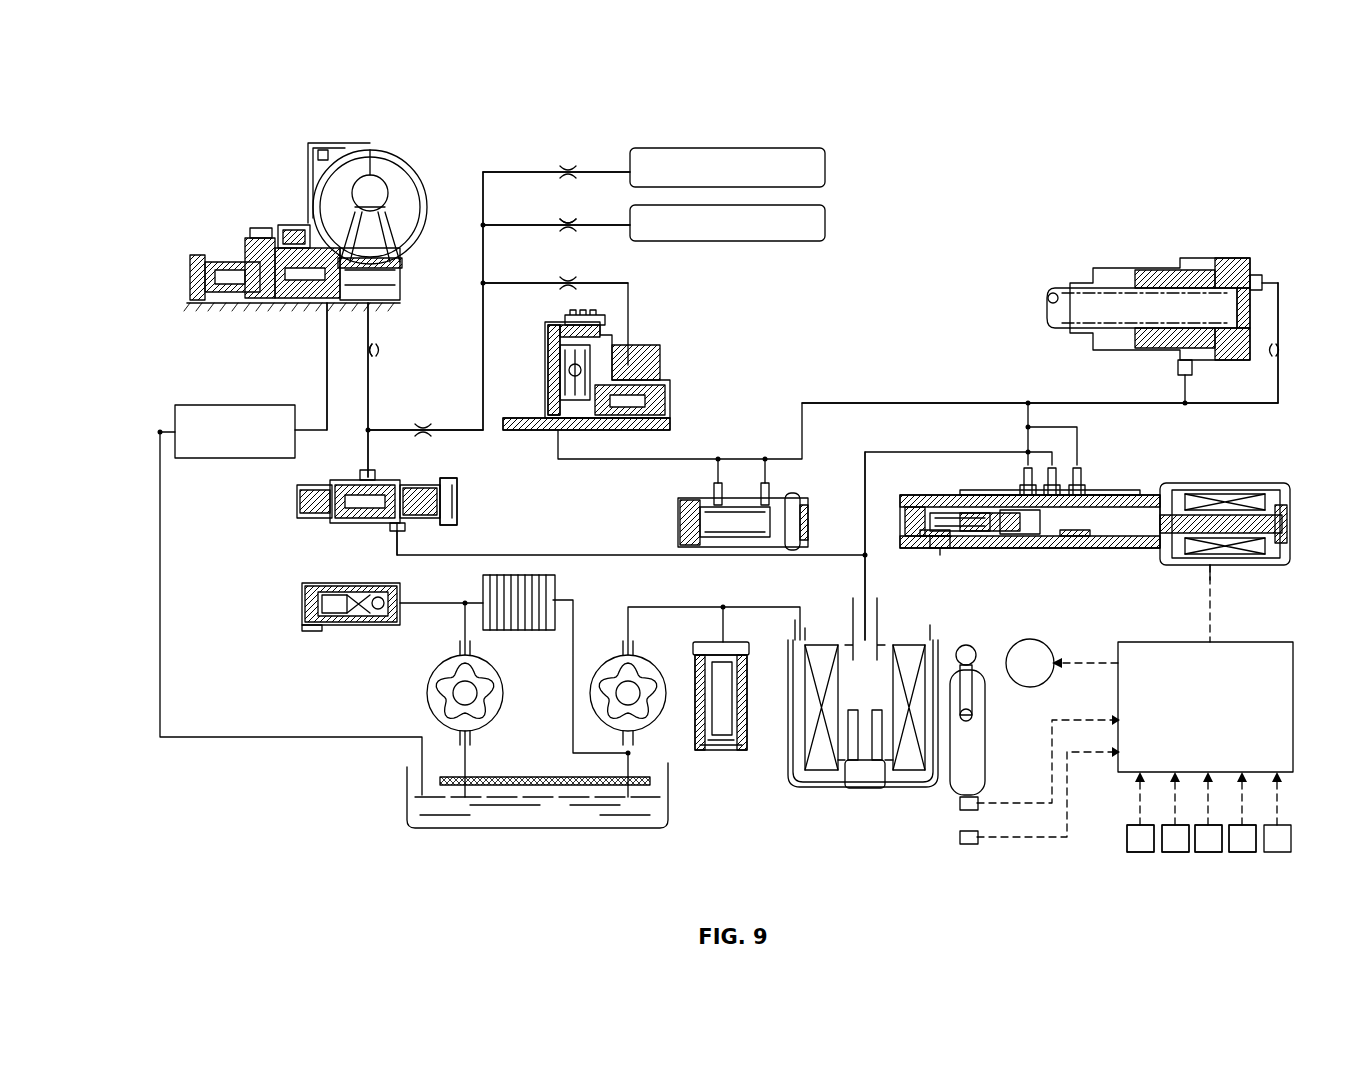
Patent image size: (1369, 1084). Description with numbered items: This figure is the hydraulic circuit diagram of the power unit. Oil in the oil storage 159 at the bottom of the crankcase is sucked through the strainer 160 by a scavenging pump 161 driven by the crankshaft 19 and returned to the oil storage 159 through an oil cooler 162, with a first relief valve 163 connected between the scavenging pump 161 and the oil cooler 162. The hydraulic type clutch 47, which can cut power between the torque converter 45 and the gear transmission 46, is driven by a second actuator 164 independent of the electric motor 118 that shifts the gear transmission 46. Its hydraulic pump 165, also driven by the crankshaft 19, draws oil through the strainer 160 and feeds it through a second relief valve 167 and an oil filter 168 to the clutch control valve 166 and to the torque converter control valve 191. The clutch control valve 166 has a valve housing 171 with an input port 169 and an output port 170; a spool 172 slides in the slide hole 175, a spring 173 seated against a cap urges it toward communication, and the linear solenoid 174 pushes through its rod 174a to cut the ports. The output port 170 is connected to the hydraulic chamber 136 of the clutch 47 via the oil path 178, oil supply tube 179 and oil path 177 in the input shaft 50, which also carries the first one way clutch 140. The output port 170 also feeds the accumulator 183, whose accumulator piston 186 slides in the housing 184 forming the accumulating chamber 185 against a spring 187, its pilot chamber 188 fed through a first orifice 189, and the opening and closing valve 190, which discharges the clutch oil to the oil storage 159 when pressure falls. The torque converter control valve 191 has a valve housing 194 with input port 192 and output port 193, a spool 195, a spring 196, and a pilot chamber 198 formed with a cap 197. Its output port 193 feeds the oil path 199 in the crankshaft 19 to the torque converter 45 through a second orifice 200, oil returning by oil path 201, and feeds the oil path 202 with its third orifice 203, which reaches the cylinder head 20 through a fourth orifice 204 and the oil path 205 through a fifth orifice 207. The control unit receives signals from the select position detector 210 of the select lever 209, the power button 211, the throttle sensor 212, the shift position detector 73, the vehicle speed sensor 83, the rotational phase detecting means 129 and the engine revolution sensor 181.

The torque converter 45 is at (297, 200).
The crankshaft 19 is at (197, 405).
The cylinder head 20 is at (823, 160).
The gear transmission 46 is at (823, 218).
The hydraulic type clutch 47 is at (620, 362).
The input shaft 50 is at (668, 428).
The shift position detector 73 is at (1180, 848).
The vehicle speed sensor 83 is at (1210, 848).
The electric motor 118 is at (1042, 641).
The rotational phase detecting means 129 is at (1245, 848).
The hydraulic chamber 136 is at (548, 390).
The first one way clutch 140 is at (628, 378).
The oil storage 159 is at (501, 778).
The strainer 160 is at (560, 777).
The scavenging pump 161 is at (440, 666).
The oil cooler 162 is at (500, 630).
The first relief valve 163 is at (350, 625).
The second actuator 164 is at (860, 510).
The hydraulic pump 165 is at (606, 658).
The clutch control valve 166 is at (1040, 520).
The second relief valve 167 is at (740, 742).
The oil filter 168 is at (835, 790).
The input port 169 is at (1056, 482).
The output port 170 is at (1022, 498).
The valve housing 171 is at (945, 550).
The spool 172 is at (1005, 537).
The spring 173 is at (940, 512).
The linear solenoid 174 is at (1230, 532).
The rod 174a is at (1155, 552).
The slide hole 175 is at (968, 532).
The oil path 177 is at (1040, 368).
The oil path 178 is at (1040, 368).
The oil supply tube 179 is at (862, 403).
The engine revolution sensor 181 is at (1212, 833).
The accumulator 183 is at (1174, 290).
The housing 184 is at (1118, 268).
The accumulating chamber 185 is at (1195, 270).
The accumulator piston 186 is at (1248, 268).
The spring 187 is at (1072, 288).
The pilot chamber 188 is at (1248, 308).
The first orifice 189 is at (1282, 352).
The opening and closing valve 190 is at (700, 503).
The torque converter control valve 191 is at (392, 521).
The input port 192 is at (402, 531).
The output port 193 is at (372, 470).
The valve housing 194 is at (457, 480).
The spool 195 is at (385, 523).
The spring 196 is at (297, 512).
The cap 197 is at (457, 502).
The pilot chamber 198 is at (457, 512).
The oil path 199 is at (380, 345).
The second orifice 200 is at (380, 355).
The oil path 201 is at (327, 390).
The oil path 202 is at (483, 250).
The third orifice 203 is at (423, 422).
The fourth orifice 204 is at (566, 166).
The oil path 205 is at (548, 222).
The fifth orifice 207 is at (572, 222).
The select lever 209 is at (970, 648).
The select position detector 210 is at (960, 803).
The power button 211 is at (960, 837).
The throttle sensor 212 is at (1130, 840).